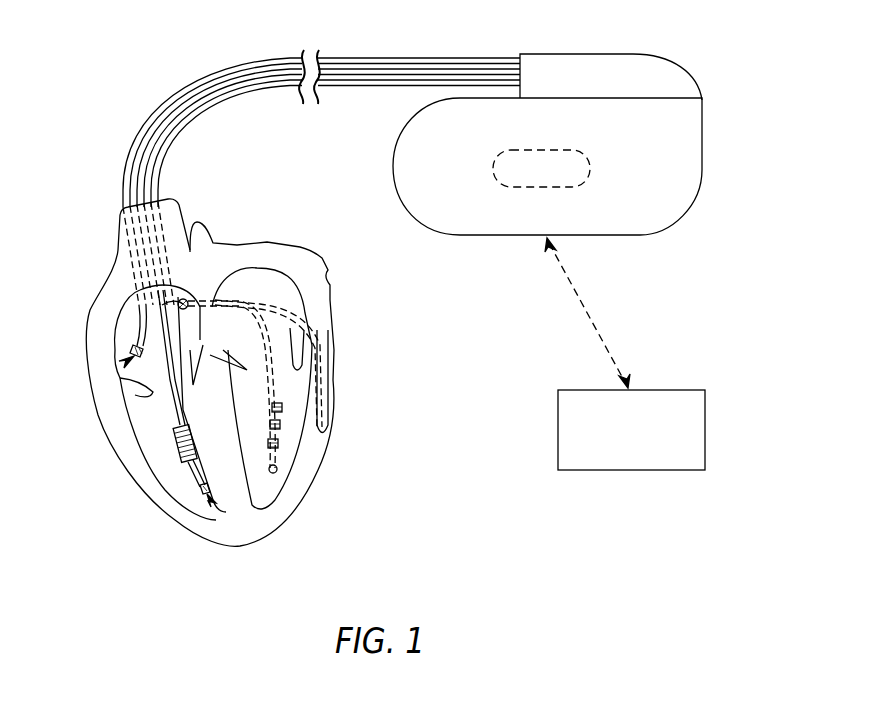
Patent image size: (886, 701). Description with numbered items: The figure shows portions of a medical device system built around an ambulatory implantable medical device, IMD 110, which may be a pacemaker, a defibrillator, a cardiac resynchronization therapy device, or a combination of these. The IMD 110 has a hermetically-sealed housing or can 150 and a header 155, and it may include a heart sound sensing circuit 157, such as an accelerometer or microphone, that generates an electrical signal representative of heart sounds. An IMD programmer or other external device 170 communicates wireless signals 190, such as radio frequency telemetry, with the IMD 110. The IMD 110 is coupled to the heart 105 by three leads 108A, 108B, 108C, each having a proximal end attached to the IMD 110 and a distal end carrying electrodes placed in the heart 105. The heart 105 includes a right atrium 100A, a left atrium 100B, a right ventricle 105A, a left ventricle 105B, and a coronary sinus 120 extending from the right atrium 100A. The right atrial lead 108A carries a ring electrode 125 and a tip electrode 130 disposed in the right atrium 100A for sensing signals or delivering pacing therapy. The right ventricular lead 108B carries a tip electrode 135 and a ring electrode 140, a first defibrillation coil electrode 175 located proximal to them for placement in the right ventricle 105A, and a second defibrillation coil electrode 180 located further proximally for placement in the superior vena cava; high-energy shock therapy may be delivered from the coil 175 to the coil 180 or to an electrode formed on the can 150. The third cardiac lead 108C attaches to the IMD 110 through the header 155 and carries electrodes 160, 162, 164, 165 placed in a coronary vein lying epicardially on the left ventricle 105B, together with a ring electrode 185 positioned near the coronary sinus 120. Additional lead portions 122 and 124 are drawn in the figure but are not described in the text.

The IMD 110 is at (604, 45).
The header 155 is at (670, 70).
The IMD housing or can 150 is at (704, 160).
The heart sound sensing circuit 157 is at (543, 151).
The right atrial lead 108A is at (242, 66).
The right ventricular lead 108B is at (196, 95).
The third cardiac lead 108C is at (212, 117).
The second defibrillation coil electrode 180 is at (118, 241).
The right atrium 100A is at (150, 403).
The left atrium 100B is at (266, 285).
The heart 105 is at (332, 357).
The right ventricle 105A is at (155, 418).
The left ventricle 105B is at (275, 500).
The ring electrode 185 is at (188, 297).
The coronary sinus 120 is at (190, 311).
The left ventricular lead 122 is at (278, 400).
The coronary sinus lead 124 is at (315, 335).
The electrode 164 is at (282, 420).
The electrode 162 is at (282, 441).
The electrode 160 is at (280, 460).
The electrode 165 is at (278, 468).
The tip electrode 130 is at (150, 377).
The ring electrode 125 is at (128, 352).
The tip electrode 135 is at (207, 514).
The first defibrillation coil electrode 175 is at (178, 450).
The ring electrode 140 is at (200, 493).
The external device 170 is at (706, 429).
The wireless signals 190 is at (589, 313).